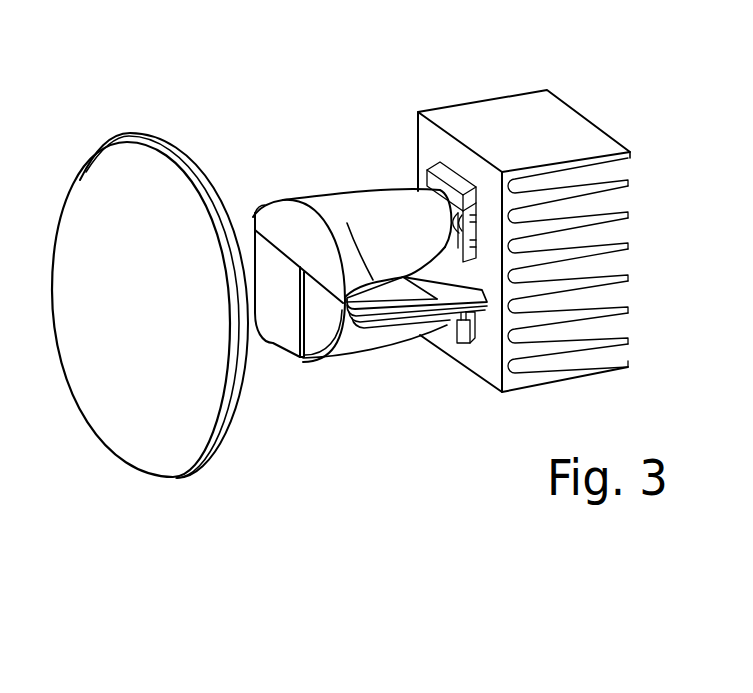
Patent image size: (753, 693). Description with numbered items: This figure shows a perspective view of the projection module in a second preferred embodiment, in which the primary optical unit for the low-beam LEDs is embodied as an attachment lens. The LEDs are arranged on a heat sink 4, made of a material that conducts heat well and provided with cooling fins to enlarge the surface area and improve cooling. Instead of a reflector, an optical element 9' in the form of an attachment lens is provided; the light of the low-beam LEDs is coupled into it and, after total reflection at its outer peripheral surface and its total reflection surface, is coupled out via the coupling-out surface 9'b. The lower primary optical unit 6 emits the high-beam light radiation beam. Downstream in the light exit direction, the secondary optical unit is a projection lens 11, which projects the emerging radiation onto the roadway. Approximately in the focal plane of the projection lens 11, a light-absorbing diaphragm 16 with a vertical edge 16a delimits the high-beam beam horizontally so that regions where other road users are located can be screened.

The heat sink 4 is at (552, 125).
The primary optical unit 6 is at (381, 333).
The optical element 9' is at (367, 239).
The coupling-out surface 9'b is at (280, 234).
The projection lens 11 is at (118, 415).
The diaphragm 16 is at (283, 330).
The vertical edge 16a is at (305, 310).